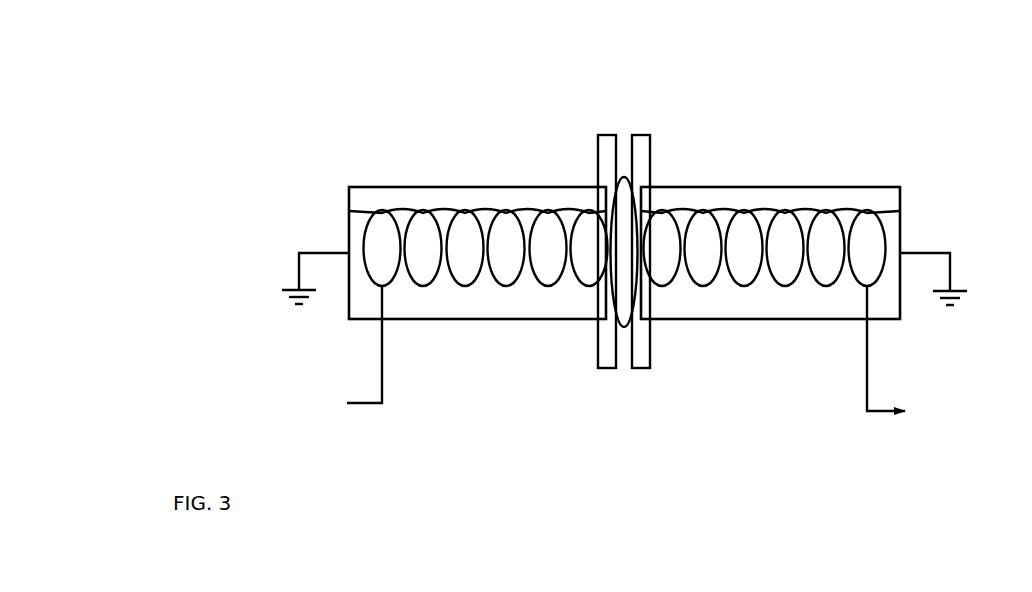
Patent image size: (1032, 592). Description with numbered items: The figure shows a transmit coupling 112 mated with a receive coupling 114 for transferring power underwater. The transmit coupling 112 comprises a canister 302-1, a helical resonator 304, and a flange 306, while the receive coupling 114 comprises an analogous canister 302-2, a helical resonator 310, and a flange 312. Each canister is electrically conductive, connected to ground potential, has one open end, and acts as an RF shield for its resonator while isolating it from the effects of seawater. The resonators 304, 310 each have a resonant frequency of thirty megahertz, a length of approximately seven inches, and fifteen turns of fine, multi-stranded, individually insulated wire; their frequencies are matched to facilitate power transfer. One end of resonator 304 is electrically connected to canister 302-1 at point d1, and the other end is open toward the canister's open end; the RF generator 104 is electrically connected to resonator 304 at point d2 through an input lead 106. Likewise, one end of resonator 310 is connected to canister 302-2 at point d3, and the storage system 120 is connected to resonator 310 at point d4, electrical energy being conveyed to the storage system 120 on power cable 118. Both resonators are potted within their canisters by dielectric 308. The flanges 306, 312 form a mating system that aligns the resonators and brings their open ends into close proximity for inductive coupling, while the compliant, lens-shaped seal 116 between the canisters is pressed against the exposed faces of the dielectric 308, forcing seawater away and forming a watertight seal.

The RF generator 104 is at (313, 420).
The input conductor 106 is at (382, 335).
The transmit coupling 112 is at (290, 103).
The receive coupling 114 is at (958, 103).
The seal 116 is at (622, 203).
The power cable 118 is at (867, 335).
The storage system 120 is at (941, 436).
The canister 302-1 is at (543, 320).
The canister 302-2 is at (700, 320).
The resonator 304 is at (492, 210).
The flange 306 is at (607, 363).
The dielectric 308 is at (469, 307).
The resonator 310 is at (760, 210).
The flange 312 is at (640, 363).
The point d1 is at (340, 210).
The point d2 is at (390, 295).
The point d3 is at (912, 205).
The point d4 is at (862, 293).